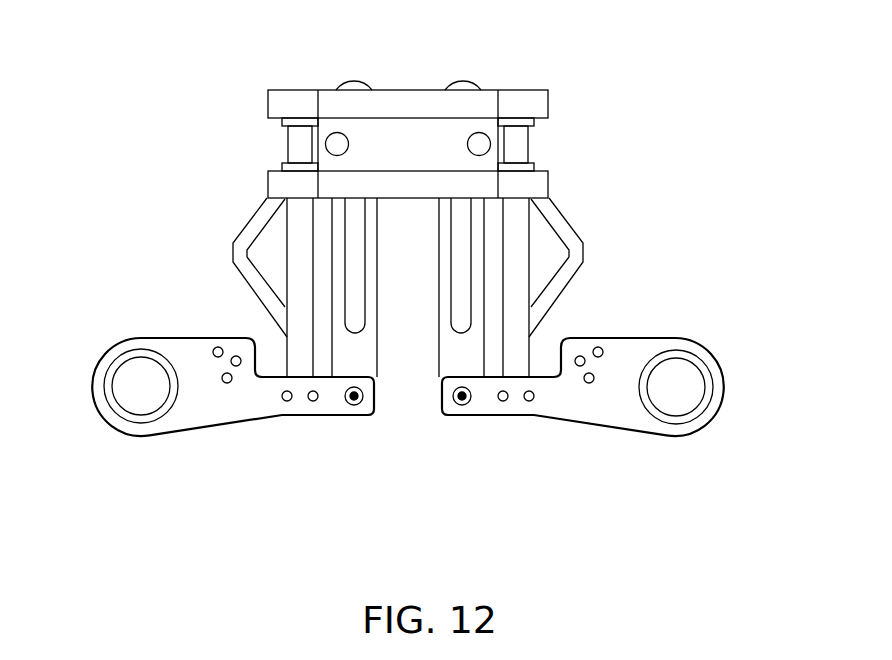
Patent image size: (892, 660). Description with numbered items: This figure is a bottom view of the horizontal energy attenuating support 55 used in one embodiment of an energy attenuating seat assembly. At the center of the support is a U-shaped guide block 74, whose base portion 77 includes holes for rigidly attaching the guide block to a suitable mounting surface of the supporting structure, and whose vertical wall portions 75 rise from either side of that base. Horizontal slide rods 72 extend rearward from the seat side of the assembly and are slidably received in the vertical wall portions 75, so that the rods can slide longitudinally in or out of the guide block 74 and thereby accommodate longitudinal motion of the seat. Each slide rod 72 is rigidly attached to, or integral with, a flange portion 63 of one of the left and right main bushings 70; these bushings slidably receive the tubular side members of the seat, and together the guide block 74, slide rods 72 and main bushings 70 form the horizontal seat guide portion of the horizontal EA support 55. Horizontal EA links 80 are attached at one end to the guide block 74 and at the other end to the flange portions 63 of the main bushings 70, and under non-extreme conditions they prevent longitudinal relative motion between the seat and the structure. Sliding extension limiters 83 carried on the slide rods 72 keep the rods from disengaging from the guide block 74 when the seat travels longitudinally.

The horizontal EA support 55 is at (662, 156).
The flange portion 63 is at (300, 402).
The main bushing 70 is at (107, 382).
The horizontal slide rod 72 is at (297, 238).
The guide block 74 is at (405, 90).
The vertical wall portion 75 is at (548, 183).
The base portion 77 is at (418, 157).
The horizontal EA link 80 is at (243, 260).
The sliding extension limiter 83 is at (442, 338).